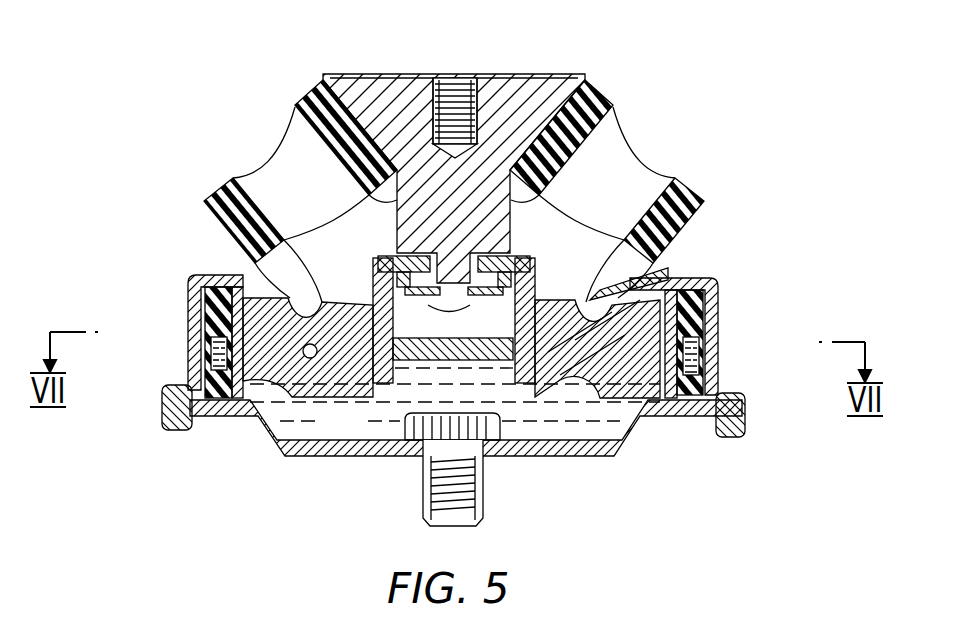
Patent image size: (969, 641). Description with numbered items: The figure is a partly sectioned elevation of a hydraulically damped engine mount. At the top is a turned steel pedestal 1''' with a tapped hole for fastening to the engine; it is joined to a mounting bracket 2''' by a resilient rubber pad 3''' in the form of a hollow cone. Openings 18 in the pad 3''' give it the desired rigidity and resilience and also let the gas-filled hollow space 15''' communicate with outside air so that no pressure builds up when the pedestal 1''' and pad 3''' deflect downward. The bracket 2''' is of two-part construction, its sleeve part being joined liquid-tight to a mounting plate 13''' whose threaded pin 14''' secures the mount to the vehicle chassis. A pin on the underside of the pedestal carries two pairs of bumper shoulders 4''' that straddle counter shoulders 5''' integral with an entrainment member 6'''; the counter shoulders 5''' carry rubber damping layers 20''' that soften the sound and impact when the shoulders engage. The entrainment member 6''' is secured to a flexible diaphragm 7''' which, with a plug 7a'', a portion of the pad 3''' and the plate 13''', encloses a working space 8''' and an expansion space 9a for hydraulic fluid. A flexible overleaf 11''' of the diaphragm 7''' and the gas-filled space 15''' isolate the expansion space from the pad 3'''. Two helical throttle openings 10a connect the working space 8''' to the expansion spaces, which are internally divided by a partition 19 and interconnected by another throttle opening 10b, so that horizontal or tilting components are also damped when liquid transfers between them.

The pedestal 1''' is at (454, 156).
The openings 18 is at (263, 177).
The resilient rubber pad 3''' is at (626, 191).
The bumper shoulders 4''' is at (397, 270).
The counter shoulders 5''' is at (510, 267).
The entrainment member 6''' is at (539, 300).
The rubber damping layers 20''' is at (358, 310).
The plug 7a'' is at (454, 313).
The diaphragm 7''' is at (549, 410).
The partition 19 is at (314, 346).
The expansion space 9a is at (552, 325).
The gas-filled hollow space 15''' is at (594, 314).
The overleaf 11''' is at (668, 260).
The mounting bracket 2''' is at (483, 355).
The throttle opening 10a is at (214, 352).
The throttle opening 10b is at (322, 380).
The working space 8''' is at (459, 460).
The mounting plate 13''' is at (466, 460).
The threaded pin 14''' is at (427, 469).